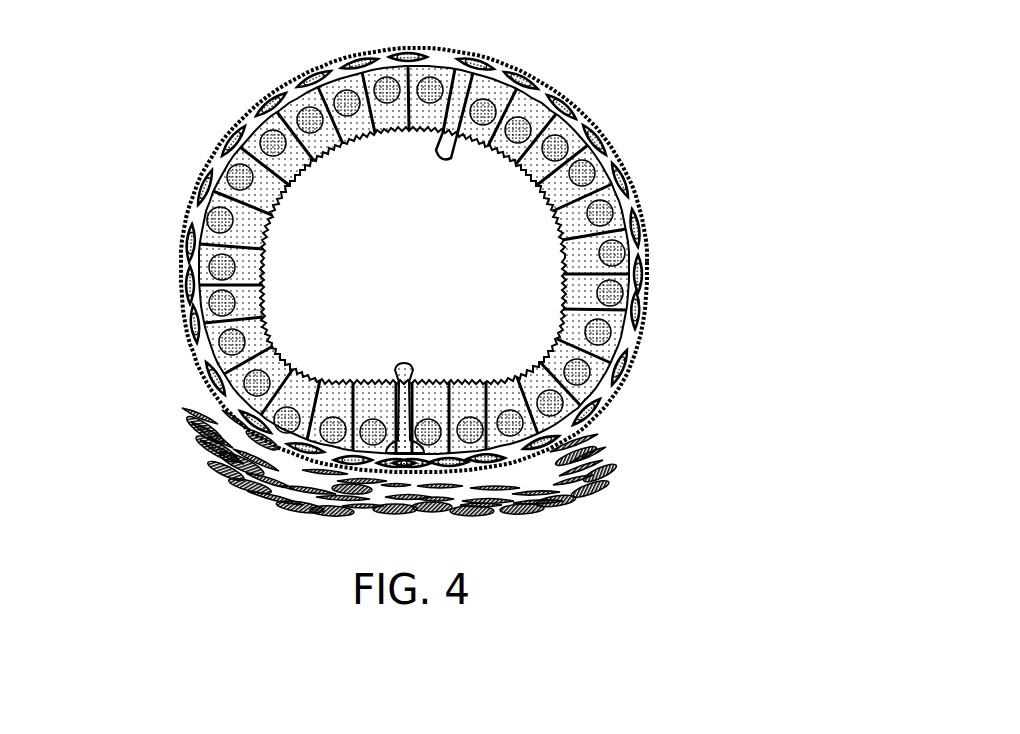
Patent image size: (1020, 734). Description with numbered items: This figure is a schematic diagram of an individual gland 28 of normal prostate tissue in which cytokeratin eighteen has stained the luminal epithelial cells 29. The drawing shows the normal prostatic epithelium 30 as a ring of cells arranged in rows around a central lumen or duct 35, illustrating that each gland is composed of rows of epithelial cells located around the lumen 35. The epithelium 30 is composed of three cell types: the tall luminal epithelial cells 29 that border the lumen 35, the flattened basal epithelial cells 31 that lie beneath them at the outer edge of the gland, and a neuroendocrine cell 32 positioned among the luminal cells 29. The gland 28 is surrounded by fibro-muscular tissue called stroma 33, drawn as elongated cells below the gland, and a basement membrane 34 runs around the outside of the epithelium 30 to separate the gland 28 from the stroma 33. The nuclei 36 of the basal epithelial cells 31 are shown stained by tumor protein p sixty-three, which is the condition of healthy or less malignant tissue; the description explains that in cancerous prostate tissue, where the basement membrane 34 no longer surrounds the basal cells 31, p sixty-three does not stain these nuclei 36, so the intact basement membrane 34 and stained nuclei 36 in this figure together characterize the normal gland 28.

The individual gland 28 is at (611, 100).
The luminal epithelial cells 29 is at (338, 381).
The prostatic epithelium 30 is at (345, 368).
The basal epithelial cells 31 is at (276, 459).
The neuroendocrine cell 32 is at (405, 376).
The stroma 33 is at (692, 484).
The basement membrane 34 is at (203, 383).
The lumen 35 is at (439, 230).
The nuclei of the basal epithelial cells 36 is at (205, 387).